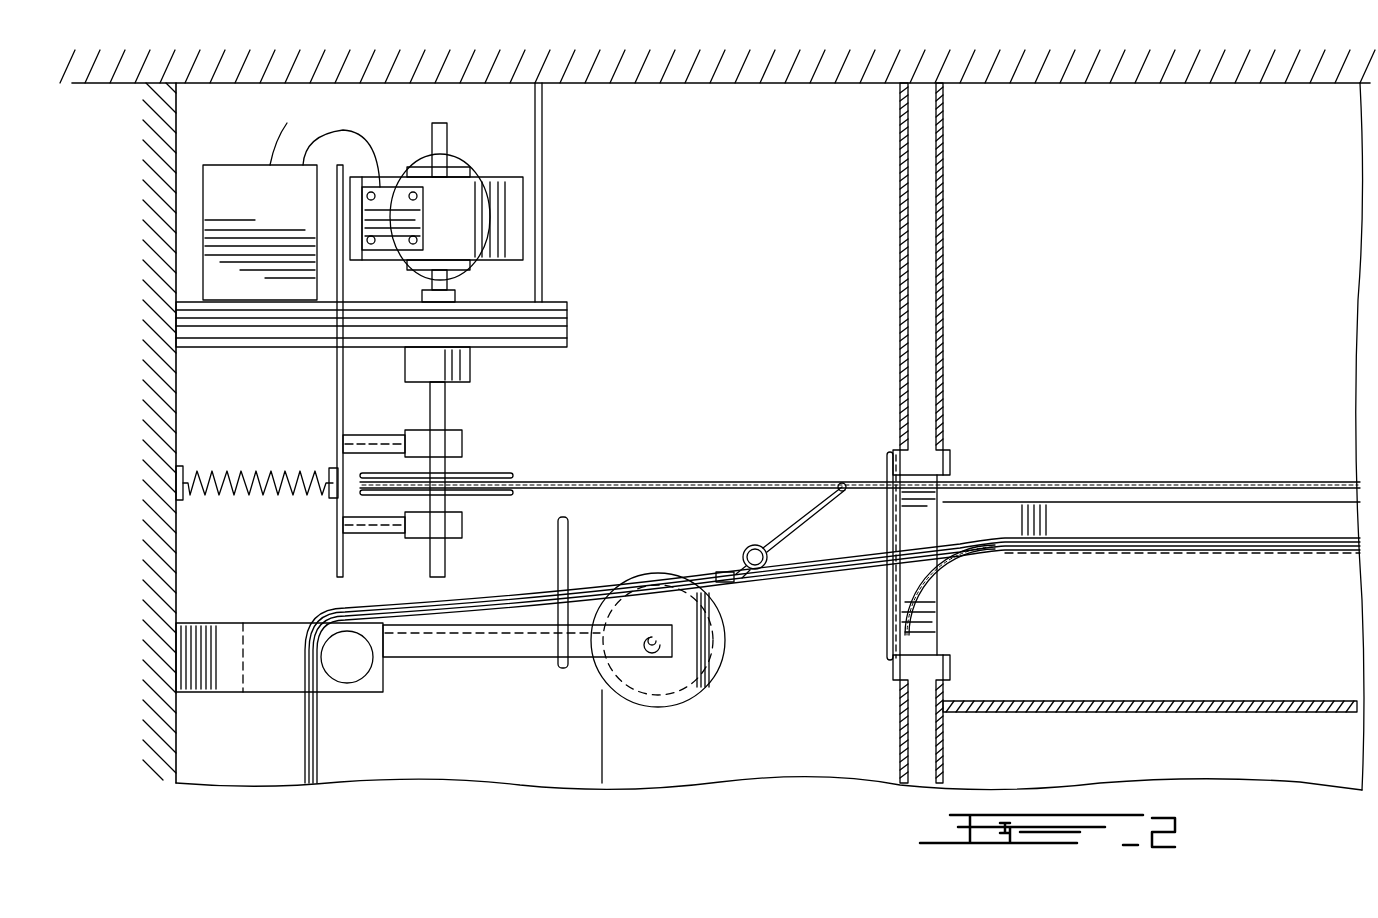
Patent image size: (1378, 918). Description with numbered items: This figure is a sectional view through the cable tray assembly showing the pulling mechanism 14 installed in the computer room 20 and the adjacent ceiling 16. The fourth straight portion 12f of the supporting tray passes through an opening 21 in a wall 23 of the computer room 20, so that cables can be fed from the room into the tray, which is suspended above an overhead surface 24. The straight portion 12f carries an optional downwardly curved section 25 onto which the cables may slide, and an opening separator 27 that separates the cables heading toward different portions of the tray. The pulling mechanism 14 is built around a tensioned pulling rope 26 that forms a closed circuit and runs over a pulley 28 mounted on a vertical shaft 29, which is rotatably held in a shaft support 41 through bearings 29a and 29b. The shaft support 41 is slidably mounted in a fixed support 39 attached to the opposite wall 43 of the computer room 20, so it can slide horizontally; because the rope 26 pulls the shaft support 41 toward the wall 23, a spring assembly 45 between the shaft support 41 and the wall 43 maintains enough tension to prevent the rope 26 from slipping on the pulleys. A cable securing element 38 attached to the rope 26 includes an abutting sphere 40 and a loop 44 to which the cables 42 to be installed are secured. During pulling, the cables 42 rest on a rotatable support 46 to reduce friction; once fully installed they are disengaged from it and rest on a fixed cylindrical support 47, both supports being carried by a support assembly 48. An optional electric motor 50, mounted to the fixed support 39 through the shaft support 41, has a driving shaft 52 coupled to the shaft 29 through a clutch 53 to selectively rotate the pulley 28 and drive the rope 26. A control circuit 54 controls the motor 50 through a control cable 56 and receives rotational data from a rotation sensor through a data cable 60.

The fourth straight portion 12f is at (1130, 556).
The pulling mechanism 14 is at (640, 452).
The ceiling 16 is at (1145, 280).
The computer room 20 is at (740, 256).
The opening 21 is at (945, 470).
The wall 23 is at (940, 330).
The overhead surface 24 is at (1162, 712).
The downwardly curved section 25 is at (927, 587).
The pulling rope 26 is at (805, 484).
The opening separator 27 is at (888, 547).
The pulley 28 is at (512, 477).
The shaft 29 is at (443, 465).
The bearing 29a is at (452, 437).
The bearing 29b is at (462, 527).
The cable securing element 38 is at (798, 514).
The fixed support 39 is at (570, 308).
The abutting sphere 40 is at (748, 548).
The shaft support 41 is at (337, 385).
The cables 42 is at (712, 572).
The wall 43 is at (178, 528).
The loop 44 is at (762, 572).
The spring assembly 45 is at (232, 497).
The rotatable support 46 is at (696, 690).
The fixed cylindrical support 47 is at (352, 675).
The support assembly 48 is at (517, 657).
The electric motor 50 is at (455, 158).
The driving shaft 52 is at (448, 284).
The clutch 53 is at (458, 358).
The control circuit 54 is at (220, 187).
The control cable 56 is at (347, 128).
The data cable 60 is at (273, 142).